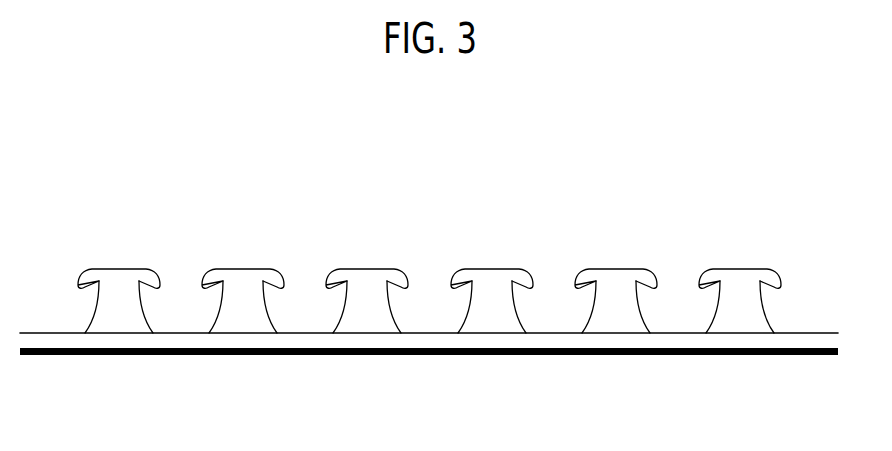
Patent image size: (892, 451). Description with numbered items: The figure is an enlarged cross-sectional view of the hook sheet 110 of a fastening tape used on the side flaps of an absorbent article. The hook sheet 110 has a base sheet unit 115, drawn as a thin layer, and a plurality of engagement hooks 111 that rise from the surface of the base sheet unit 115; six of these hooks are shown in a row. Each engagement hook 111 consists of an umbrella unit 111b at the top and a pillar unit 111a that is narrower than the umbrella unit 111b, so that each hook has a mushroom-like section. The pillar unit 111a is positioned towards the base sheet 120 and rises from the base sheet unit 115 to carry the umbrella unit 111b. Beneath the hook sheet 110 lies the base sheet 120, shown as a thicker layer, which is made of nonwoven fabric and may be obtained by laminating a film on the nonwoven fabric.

The hook sheet 110 is at (766, 225).
The engagement hook 111 is at (490, 260).
The pillar unit 111a is at (505, 310).
The umbrella unit 111b is at (508, 272).
The base sheet unit 115 is at (547, 341).
The base sheet 120 is at (622, 356).